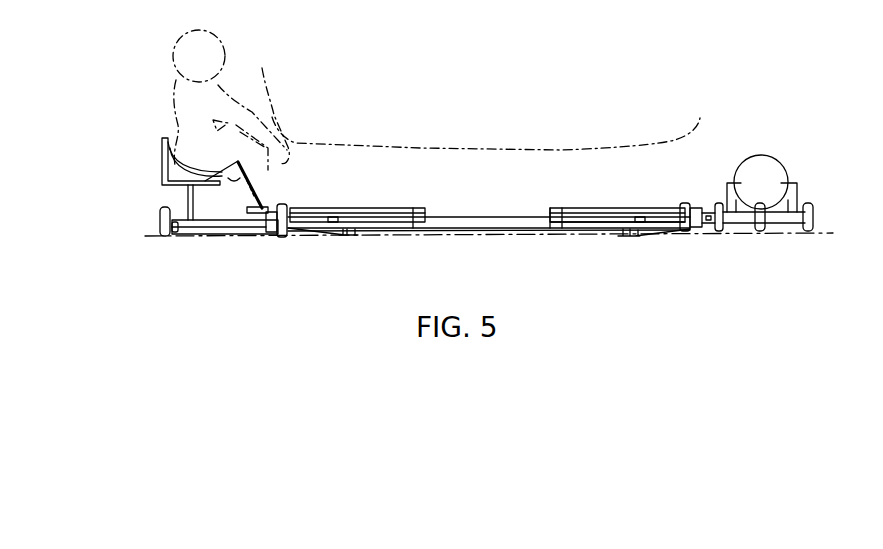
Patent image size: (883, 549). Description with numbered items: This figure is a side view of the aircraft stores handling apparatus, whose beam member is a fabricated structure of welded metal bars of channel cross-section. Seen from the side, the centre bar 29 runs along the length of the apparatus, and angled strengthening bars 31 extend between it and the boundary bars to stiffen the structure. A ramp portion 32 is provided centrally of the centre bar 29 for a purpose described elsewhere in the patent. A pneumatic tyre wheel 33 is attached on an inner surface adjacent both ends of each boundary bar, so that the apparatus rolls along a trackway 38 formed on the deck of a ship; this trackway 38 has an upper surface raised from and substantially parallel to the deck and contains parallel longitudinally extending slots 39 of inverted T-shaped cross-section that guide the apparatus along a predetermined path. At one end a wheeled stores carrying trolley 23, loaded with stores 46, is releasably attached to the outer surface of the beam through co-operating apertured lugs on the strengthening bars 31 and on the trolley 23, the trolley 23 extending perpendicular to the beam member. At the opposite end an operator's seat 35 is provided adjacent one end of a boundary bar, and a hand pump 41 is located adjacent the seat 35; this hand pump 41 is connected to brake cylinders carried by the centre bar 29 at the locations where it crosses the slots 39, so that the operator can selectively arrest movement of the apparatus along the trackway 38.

The stores carrying trolley 23 is at (792, 199).
The centre bar 29 is at (574, 224).
The angled strengthening bar 31 is at (378, 210).
The ramp portion 32 is at (463, 217).
The pneumatic tyre wheel 33 is at (284, 233).
The operator's seat 35 is at (163, 179).
The trackway 38 is at (494, 235).
The longitudinally extending slot 39 is at (350, 237).
The hand pump 41 is at (238, 186).
The stores 46 is at (768, 167).